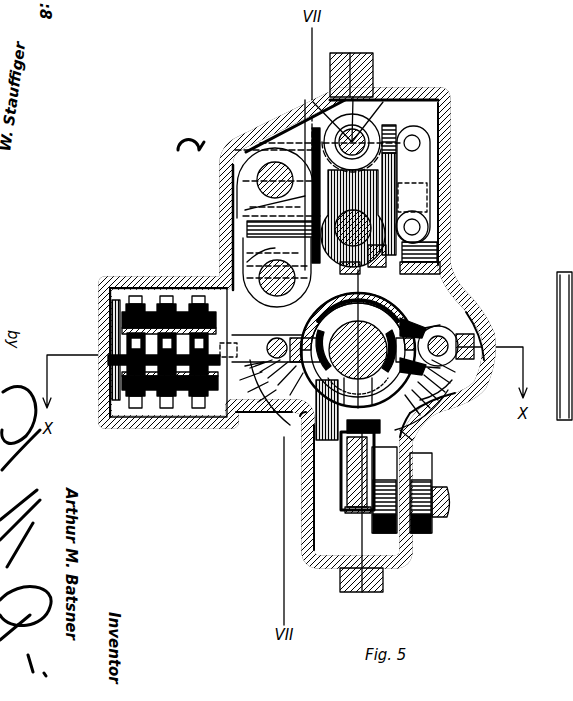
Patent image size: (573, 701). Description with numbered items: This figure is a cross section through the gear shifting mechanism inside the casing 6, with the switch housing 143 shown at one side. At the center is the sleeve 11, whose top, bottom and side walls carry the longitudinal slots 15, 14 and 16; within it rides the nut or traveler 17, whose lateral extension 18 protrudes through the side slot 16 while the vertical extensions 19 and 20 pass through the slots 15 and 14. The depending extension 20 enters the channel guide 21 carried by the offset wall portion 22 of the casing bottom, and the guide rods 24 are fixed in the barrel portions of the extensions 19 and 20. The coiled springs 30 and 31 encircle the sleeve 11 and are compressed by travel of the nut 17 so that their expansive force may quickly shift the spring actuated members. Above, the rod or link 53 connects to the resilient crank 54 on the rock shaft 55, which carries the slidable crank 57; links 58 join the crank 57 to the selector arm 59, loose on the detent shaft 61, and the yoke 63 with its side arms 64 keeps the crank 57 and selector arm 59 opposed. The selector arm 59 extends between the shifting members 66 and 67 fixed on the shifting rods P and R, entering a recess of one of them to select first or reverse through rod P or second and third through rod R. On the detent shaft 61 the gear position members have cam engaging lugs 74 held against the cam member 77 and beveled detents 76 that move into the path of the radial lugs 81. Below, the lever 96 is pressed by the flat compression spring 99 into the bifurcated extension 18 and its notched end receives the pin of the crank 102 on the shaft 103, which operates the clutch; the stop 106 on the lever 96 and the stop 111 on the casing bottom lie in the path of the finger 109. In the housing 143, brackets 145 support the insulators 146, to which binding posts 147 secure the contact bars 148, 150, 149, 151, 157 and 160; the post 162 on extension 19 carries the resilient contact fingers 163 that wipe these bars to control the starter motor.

The casing 6 is at (246, 148).
The sleeve 11 is at (320, 298).
The longitudinal slot 14 is at (430, 395).
The longitudinal slot 15 is at (297, 410).
The longitudinal slot 16 is at (413, 423).
The nut or traveler 17 is at (410, 312).
The lateral extension 18 is at (432, 440).
The vertical extension 19 is at (253, 337).
The vertical extension 20 is at (460, 396).
The channel guide 21 is at (473, 323).
The offset wall portion 22 is at (495, 335).
The guide rods 24 is at (442, 338).
The coiled spring 30 is at (495, 357).
The coiled spring 31 is at (445, 420).
The rod or link 53 is at (355, 128).
The resilient or flexible crank 54 is at (190, 138).
The rock shaft 55 is at (318, 108).
The crank 57 is at (384, 128).
The links 58 is at (418, 170).
The selector arm 59 is at (250, 232).
The detent shaft 61 is at (437, 195).
The yoke 63 is at (296, 140).
The side arms 64 is at (330, 155).
The shifting member 66 is at (253, 207).
The shifting member 67 is at (245, 258).
The cam engaging lug 74 is at (402, 200).
The beveled detent 76 is at (445, 230).
The cam member 77 is at (450, 243).
The radial lugs 81 is at (452, 250).
The lever 96 is at (325, 482).
The flat compression spring 99 is at (355, 510).
The crank 102 is at (407, 563).
The shaft 103 is at (452, 510).
The stop 106 is at (300, 470).
The finger 109 is at (360, 483).
The stop 111 is at (412, 455).
The housing 143 is at (140, 279).
The brackets 145 is at (107, 425).
The insulators 146 is at (127, 410).
The binding posts 147 is at (103, 295).
The contact bar 148 is at (187, 428).
The contact bar 149 is at (223, 323).
The contact bar 150 is at (157, 428).
The contact bar 151 is at (160, 284).
The contact bar 157 is at (123, 385).
The contact bar 160 is at (117, 312).
The post 162 is at (120, 353).
The resilient contact fingers 163 is at (130, 340).
The shifting rod P is at (250, 183).
The shifting rod R is at (240, 247).